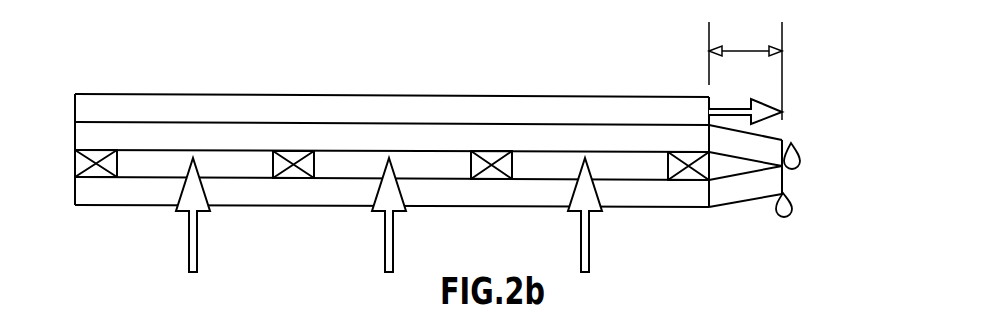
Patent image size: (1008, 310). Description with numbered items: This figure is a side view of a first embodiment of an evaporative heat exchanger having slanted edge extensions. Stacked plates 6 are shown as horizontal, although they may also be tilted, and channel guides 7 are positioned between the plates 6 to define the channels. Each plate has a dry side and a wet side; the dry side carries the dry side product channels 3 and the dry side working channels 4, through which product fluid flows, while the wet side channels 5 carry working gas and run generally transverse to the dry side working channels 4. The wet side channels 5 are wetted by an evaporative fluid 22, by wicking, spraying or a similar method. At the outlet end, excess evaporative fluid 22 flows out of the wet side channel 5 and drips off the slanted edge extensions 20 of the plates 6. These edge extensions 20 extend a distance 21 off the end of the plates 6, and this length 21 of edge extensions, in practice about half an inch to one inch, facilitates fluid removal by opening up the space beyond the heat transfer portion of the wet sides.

The dry side product channels 3 is at (740, 107).
The dry side working channels 4 is at (385, 232).
The wet side channels 5 is at (670, 96).
The plates 6 is at (413, 178).
The channel guides 7 is at (118, 163).
The edge extensions 20 is at (764, 132).
The length of edge extensions 21 is at (750, 50).
The evaporative fluid 22 is at (796, 168).